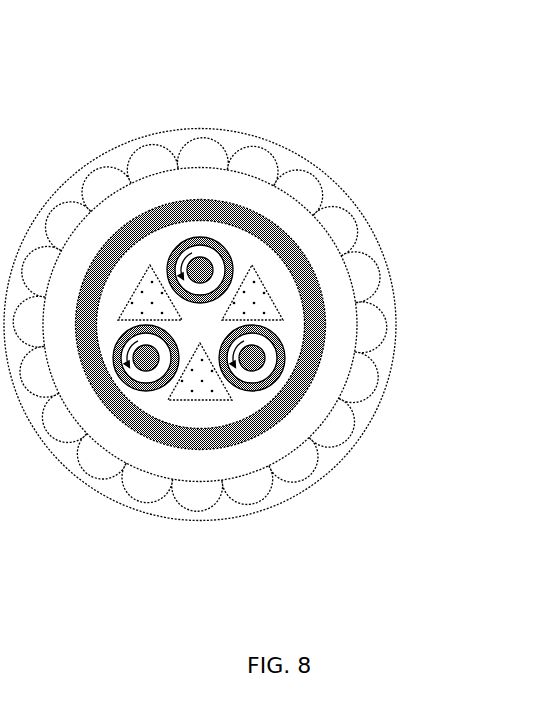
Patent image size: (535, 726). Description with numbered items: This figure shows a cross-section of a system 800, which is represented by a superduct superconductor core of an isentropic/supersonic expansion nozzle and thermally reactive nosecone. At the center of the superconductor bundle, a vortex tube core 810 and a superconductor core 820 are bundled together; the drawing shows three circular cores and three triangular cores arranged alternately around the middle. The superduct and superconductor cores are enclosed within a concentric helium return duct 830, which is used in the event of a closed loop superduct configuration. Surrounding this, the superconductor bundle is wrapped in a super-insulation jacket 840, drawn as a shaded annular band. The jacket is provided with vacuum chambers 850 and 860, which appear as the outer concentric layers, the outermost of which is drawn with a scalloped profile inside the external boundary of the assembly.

The system 800 is at (266, 319).
The vortex tube core 810 is at (285, 362).
The superconductor core 820 is at (268, 292).
The concentric helium return duct 830 is at (263, 265).
The super-insulation jacket 840 is at (300, 387).
The vacuum chamber 850 is at (297, 418).
The vacuum chamber 860 is at (287, 477).